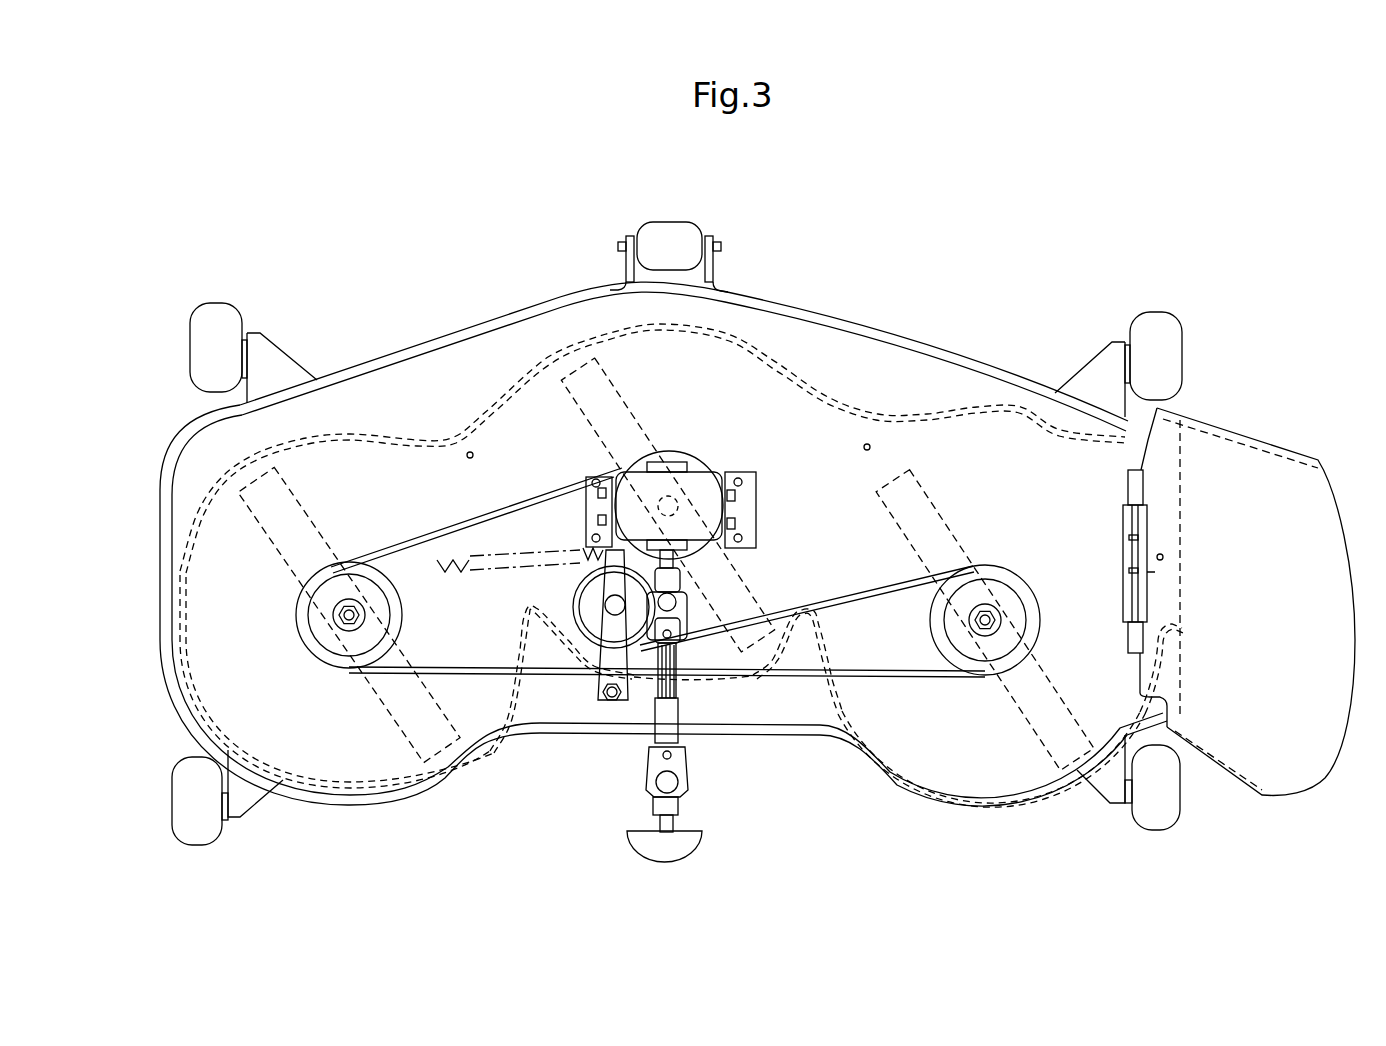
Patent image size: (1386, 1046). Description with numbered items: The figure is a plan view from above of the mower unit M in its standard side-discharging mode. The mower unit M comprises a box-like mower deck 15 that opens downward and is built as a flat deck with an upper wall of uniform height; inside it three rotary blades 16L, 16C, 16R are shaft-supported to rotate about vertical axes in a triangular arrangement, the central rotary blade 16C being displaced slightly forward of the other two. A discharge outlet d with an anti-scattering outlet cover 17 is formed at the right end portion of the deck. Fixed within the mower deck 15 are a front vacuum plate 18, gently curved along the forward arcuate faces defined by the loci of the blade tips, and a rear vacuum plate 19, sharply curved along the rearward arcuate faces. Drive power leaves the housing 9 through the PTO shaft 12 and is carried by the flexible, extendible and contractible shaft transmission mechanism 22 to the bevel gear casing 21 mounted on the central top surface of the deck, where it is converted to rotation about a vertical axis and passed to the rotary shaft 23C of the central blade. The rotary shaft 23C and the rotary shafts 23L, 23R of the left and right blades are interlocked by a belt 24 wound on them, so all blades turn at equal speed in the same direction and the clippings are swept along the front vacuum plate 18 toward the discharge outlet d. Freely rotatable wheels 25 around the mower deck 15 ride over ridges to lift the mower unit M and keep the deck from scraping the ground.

The mower unit M is at (498, 284).
The mower deck 15 is at (870, 348).
The left rotary blade 16L is at (273, 533).
The central rotary blade 16C is at (620, 397).
The right rotary blade 16R is at (935, 500).
The anti-scattering outlet cover 17 is at (1245, 445).
The front vacuum plate 18 is at (490, 425).
The rear vacuum plate 19 is at (508, 685).
The bevel gear casing 21 is at (706, 493).
The shaft transmission mechanism 22 is at (684, 710).
The rotary shaft of left rotary blade 23L is at (340, 625).
The rotary shaft of central rotary blade 23C is at (690, 503).
The rotary shaft of right rotary blade 23R is at (992, 620).
The belt 24 is at (883, 674).
The freely rotatable wheels 25 is at (218, 306).
The housing 9 is at (650, 853).
The PTO shaft 12 is at (677, 822).
The discharge outlet d is at (1184, 579).